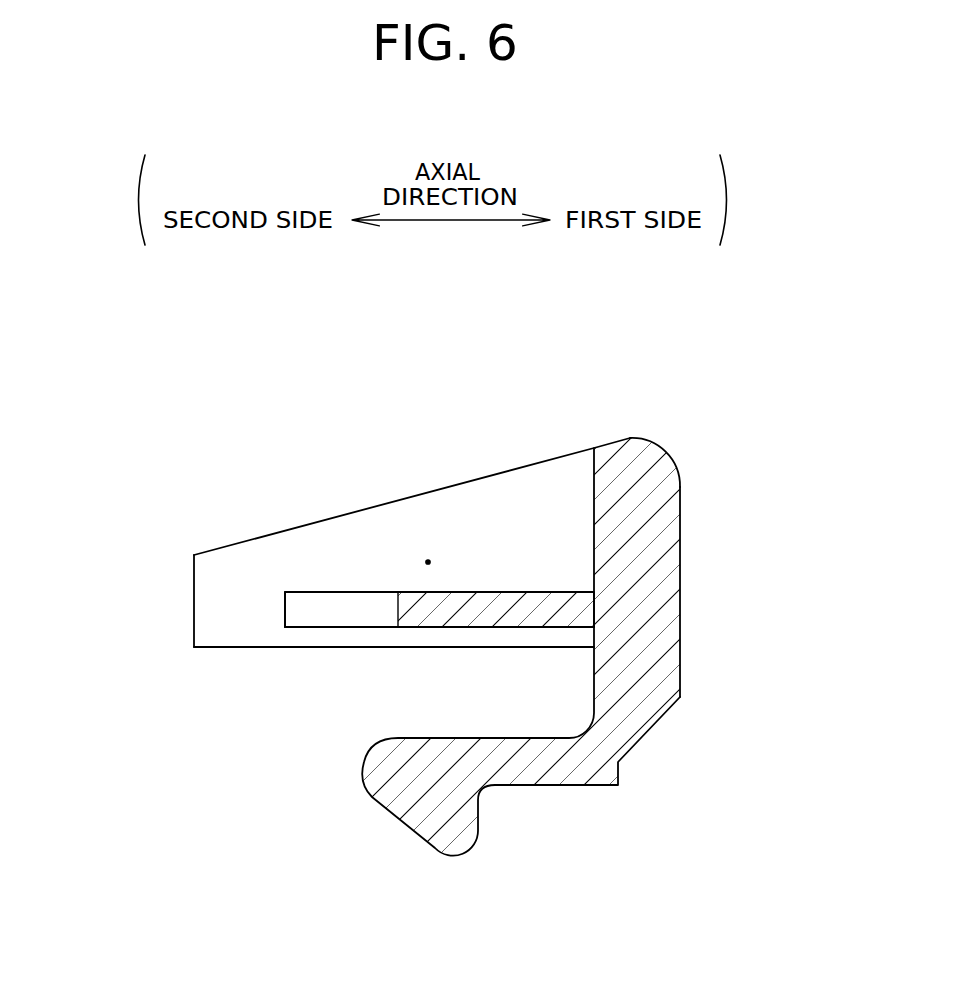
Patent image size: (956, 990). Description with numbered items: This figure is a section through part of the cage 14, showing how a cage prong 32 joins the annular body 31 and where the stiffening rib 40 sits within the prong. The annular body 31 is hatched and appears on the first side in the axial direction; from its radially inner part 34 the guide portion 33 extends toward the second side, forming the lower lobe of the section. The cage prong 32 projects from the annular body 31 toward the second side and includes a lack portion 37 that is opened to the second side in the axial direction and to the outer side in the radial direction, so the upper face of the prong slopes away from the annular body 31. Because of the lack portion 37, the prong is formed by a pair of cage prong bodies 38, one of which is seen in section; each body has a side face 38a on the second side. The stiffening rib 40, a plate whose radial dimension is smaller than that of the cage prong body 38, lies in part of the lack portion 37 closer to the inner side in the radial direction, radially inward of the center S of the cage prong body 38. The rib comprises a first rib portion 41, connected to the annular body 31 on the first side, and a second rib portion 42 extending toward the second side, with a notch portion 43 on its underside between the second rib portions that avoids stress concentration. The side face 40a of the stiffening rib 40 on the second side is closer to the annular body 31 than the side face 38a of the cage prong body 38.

The cage 14 is at (681, 444).
The annular body 31 is at (683, 577).
The cage prong 32 is at (478, 629).
The guide portion 33 is at (387, 822).
The radially inner part 34 is at (620, 772).
The lack portion 37 is at (554, 471).
The cage prong body 38 is at (346, 521).
The side face of cage prong body 38a is at (190, 628).
The stiffening rib 40 is at (478, 629).
The side face of stiffening rib 40a is at (285, 612).
The first rib portion 41 is at (480, 605).
The second rib portion 42 is at (362, 603).
The notch portion 43 is at (368, 632).
The center of cage prong body in the radial direction S is at (428, 559).